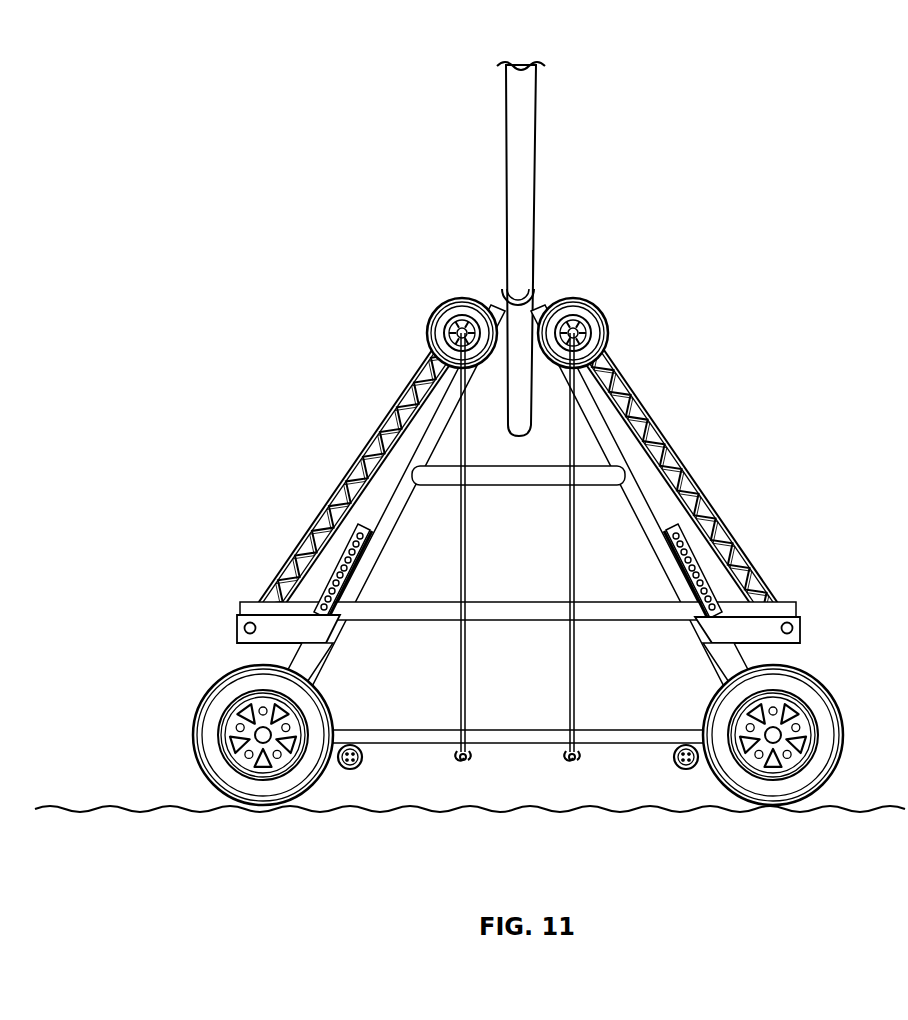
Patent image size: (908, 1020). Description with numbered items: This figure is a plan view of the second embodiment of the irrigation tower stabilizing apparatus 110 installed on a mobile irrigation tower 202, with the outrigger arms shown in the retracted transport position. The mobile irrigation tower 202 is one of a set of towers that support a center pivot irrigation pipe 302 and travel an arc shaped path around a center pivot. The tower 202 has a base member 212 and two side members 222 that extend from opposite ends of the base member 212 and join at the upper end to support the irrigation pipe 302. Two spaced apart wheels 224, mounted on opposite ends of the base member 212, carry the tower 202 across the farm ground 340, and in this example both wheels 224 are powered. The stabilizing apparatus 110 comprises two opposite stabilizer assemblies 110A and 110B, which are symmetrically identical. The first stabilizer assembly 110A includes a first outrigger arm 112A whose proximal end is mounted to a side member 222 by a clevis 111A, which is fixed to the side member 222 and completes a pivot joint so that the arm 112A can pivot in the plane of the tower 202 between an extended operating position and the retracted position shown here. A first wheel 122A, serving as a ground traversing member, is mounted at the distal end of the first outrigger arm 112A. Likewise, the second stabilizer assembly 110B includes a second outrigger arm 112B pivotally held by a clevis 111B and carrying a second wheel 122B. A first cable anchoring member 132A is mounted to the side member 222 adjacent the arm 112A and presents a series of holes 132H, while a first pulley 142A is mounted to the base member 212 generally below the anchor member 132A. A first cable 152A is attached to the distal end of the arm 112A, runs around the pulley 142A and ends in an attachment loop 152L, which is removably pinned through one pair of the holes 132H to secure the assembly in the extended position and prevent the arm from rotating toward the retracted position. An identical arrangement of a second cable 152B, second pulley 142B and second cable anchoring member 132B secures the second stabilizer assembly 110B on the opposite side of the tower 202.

The irrigation tower stabilizing apparatus 110 is at (527, 522).
The first stabilizer assembly 110A is at (337, 522).
The second stabilizer assembly 110B is at (697, 522).
The clevis 111A is at (233, 616).
The clevis 111B is at (803, 616).
The first outrigger arm 112A is at (290, 578).
The second outrigger arm 112B is at (748, 579).
The first wheel 122A is at (430, 334).
The second wheel 122B is at (604, 334).
The first cable anchoring member 132A is at (368, 527).
The second cable anchoring member 132B is at (667, 527).
The holes 132H is at (342, 572).
The first pulley 142A is at (352, 768).
The second pulley 142B is at (684, 768).
The first cable 152A is at (467, 698).
The second cable 152B is at (567, 638).
The attachment loop 152L is at (463, 764).
The mobile irrigation tower 202 is at (492, 298).
The base member 212 is at (628, 728).
The side members 222 is at (292, 660).
The wheels 224 is at (215, 688).
The center pivot irrigation pipe 302 is at (540, 104).
The farm ground 340 is at (172, 813).